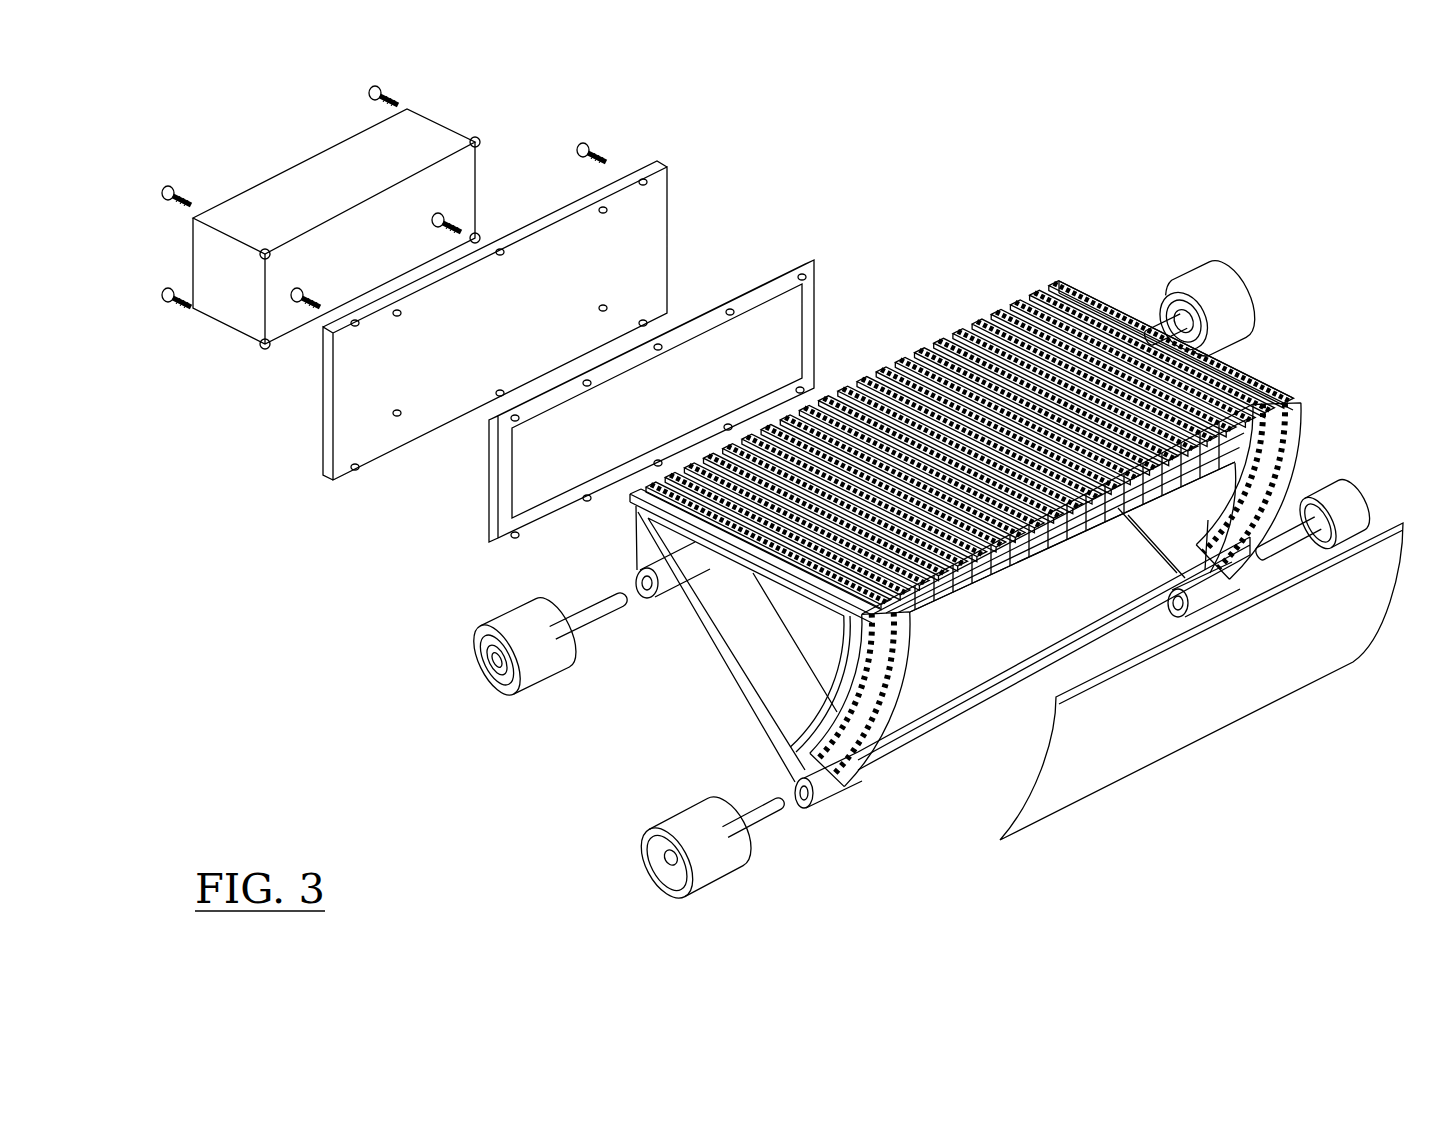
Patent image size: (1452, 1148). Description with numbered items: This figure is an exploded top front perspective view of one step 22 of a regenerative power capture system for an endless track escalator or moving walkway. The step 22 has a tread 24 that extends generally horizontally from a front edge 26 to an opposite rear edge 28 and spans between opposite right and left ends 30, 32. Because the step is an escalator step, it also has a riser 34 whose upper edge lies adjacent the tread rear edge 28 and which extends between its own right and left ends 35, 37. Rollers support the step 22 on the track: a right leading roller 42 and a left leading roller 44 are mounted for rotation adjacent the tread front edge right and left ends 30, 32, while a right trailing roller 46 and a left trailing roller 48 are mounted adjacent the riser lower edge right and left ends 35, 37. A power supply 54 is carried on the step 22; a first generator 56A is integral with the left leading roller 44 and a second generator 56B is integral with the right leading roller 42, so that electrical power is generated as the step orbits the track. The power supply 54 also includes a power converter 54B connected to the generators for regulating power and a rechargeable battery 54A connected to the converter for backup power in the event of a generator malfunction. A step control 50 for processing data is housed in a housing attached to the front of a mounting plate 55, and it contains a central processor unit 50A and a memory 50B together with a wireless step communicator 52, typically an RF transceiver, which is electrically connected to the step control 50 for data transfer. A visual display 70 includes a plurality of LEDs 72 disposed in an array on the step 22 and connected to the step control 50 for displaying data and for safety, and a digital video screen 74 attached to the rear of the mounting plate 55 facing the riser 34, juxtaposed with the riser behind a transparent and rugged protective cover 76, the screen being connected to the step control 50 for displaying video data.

The step 22 is at (880, 368).
The tread 24 is at (927, 345).
The front edge 26 is at (993, 312).
The rear edge 28 is at (1283, 390).
The right end 30 is at (1223, 370).
The left end 32 is at (830, 595).
The riser 34 is at (883, 727).
The right end 35 is at (1293, 430).
The left end 37 is at (822, 716).
The right leading roller 42 is at (1210, 270).
The left leading roller 44 is at (553, 652).
The right trailing roller 46 is at (1350, 503).
The left trailing roller 48 is at (715, 852).
The step control 50 is at (411, 307).
The central processor unit 50A is at (411, 307).
The memory 50B is at (411, 307).
The step communicator 52 is at (225, 290).
The power supply 54 is at (411, 197).
The rechargeable battery 54A is at (411, 197).
The power converter 54B is at (413, 150).
The mounting plate 55 is at (650, 245).
The first generator 56A is at (542, 668).
The second generator 56B is at (1170, 300).
The visual display 70 is at (584, 429).
The digital video screen 74 is at (540, 478).
The LEDs 72 is at (1037, 290).
The protective cover 76 is at (1213, 690).